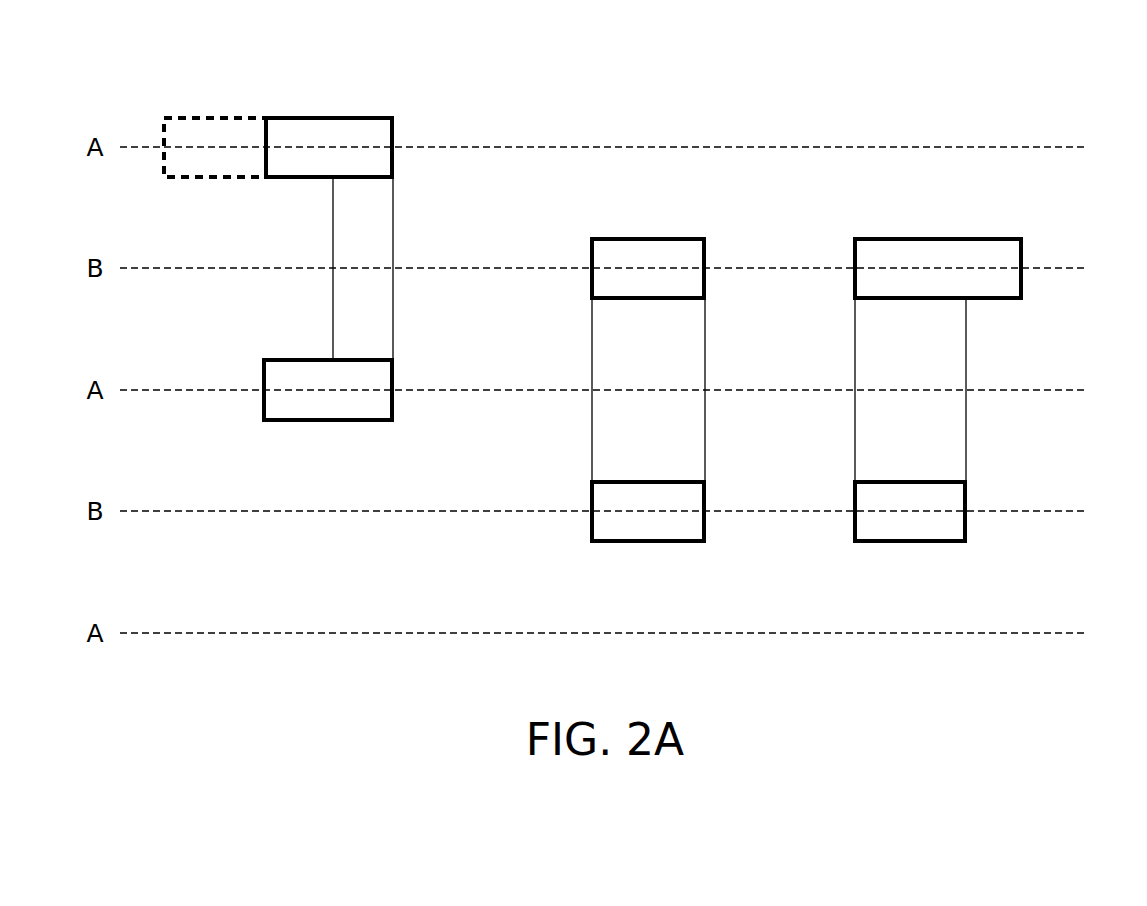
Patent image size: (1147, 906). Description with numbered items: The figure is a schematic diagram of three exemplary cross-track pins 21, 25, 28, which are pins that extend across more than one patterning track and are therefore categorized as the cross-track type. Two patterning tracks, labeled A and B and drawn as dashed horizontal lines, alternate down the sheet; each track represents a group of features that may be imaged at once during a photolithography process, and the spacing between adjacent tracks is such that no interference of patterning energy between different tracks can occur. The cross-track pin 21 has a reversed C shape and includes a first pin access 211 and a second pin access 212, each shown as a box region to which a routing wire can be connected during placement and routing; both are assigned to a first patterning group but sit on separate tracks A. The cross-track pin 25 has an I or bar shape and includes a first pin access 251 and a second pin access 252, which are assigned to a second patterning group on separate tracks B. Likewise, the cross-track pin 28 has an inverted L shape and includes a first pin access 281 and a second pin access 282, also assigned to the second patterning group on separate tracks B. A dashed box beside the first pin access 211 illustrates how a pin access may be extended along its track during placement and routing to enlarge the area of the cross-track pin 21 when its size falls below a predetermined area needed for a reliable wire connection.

The cross-track pin 21 is at (329, 244).
The first pin access 211 is at (308, 161).
The second pin access 212 is at (308, 403).
The cross-track pin 25 is at (699, 364).
The first pin access 251 is at (627, 281).
The second pin access 252 is at (627, 524).
The cross-track pin 28 is at (989, 364).
The first pin access 281 is at (889, 281).
The second pin access 282 is at (889, 524).